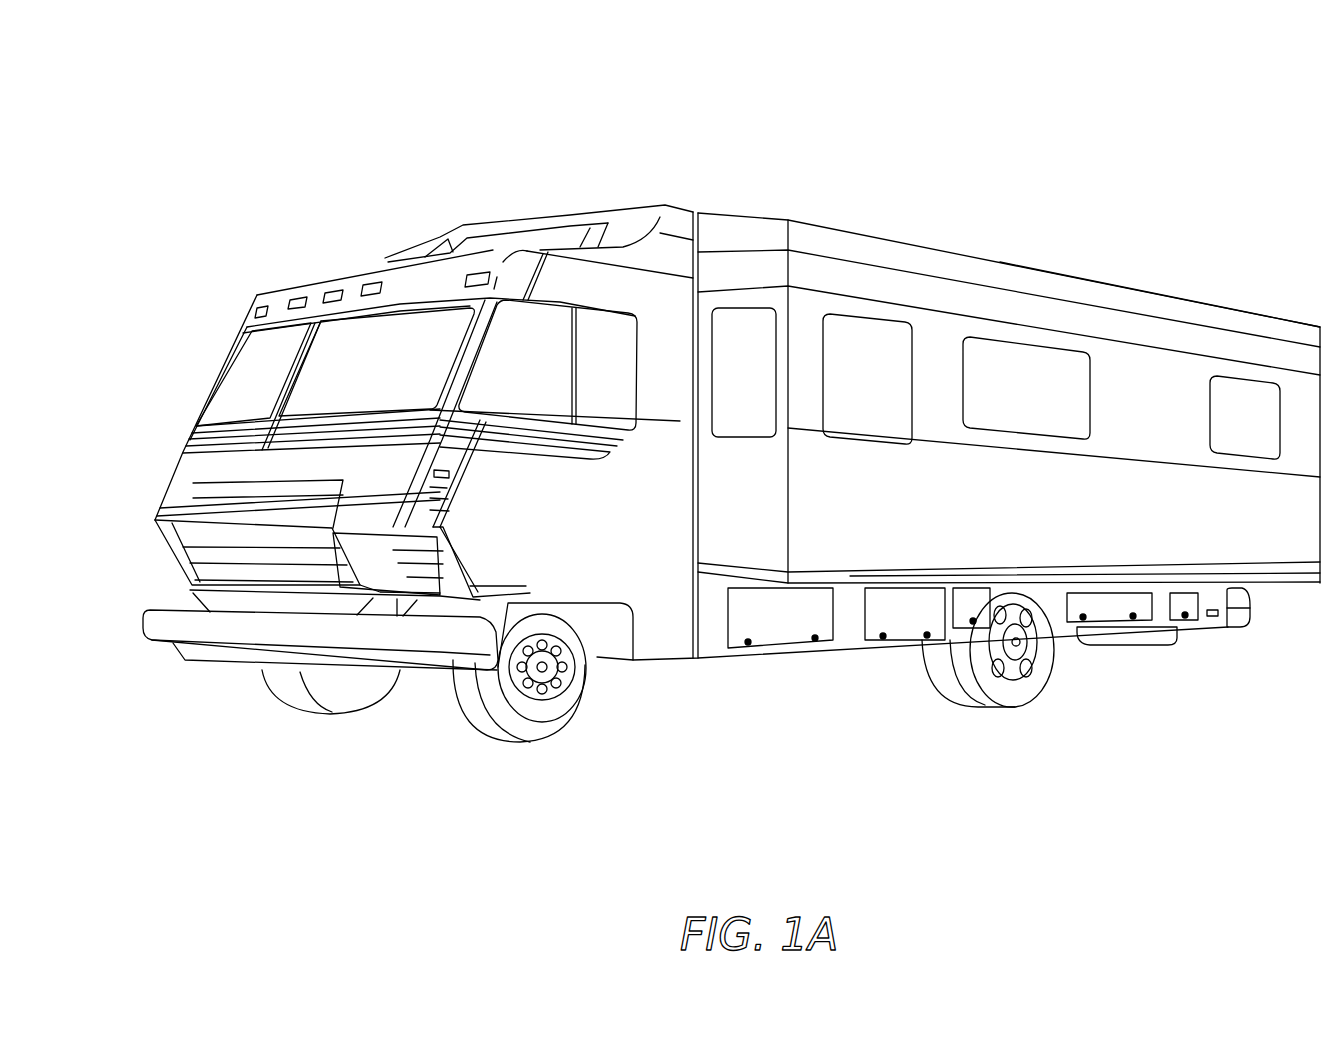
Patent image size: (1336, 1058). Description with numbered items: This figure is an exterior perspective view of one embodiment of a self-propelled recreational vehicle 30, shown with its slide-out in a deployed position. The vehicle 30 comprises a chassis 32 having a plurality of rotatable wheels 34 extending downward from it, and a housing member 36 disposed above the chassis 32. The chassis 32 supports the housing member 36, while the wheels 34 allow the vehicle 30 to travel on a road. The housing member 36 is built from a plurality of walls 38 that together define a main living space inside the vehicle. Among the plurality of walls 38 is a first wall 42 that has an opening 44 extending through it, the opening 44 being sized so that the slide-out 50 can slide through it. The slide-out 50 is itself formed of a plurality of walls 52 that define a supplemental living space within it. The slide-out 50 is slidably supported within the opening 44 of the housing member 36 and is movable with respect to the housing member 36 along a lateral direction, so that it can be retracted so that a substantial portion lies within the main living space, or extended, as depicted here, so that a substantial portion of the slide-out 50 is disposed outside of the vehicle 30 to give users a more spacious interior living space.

The recreational vehicle 30 is at (516, 106).
The chassis 32 is at (668, 650).
The rotatable wheels 34 is at (1032, 685).
The housing member 36 is at (645, 208).
The plurality of walls 38 is at (481, 196).
The first wall 42 is at (573, 583).
The opening 44 is at (1157, 214).
The slide-out member 50 is at (1217, 303).
The plurality of walls 52 is at (755, 258).